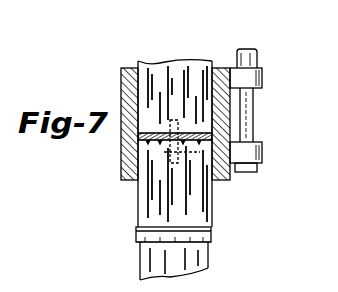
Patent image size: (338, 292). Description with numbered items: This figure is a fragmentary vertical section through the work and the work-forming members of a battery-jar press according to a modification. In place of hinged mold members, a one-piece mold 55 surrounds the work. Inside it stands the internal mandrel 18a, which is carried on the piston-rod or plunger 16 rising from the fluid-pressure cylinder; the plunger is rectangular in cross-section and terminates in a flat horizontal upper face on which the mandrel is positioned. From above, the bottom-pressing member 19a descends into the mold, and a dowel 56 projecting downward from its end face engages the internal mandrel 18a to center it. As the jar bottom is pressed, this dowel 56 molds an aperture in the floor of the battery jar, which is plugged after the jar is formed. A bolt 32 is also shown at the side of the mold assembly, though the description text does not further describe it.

The bottom-pressing member 19a is at (181, 72).
The bolt 32 is at (257, 56).
The one-piece mold 55 is at (214, 132).
The dowel 56 is at (214, 140).
The internal mandrel 18a is at (178, 197).
The piston-rod or plunger 16 is at (182, 268).